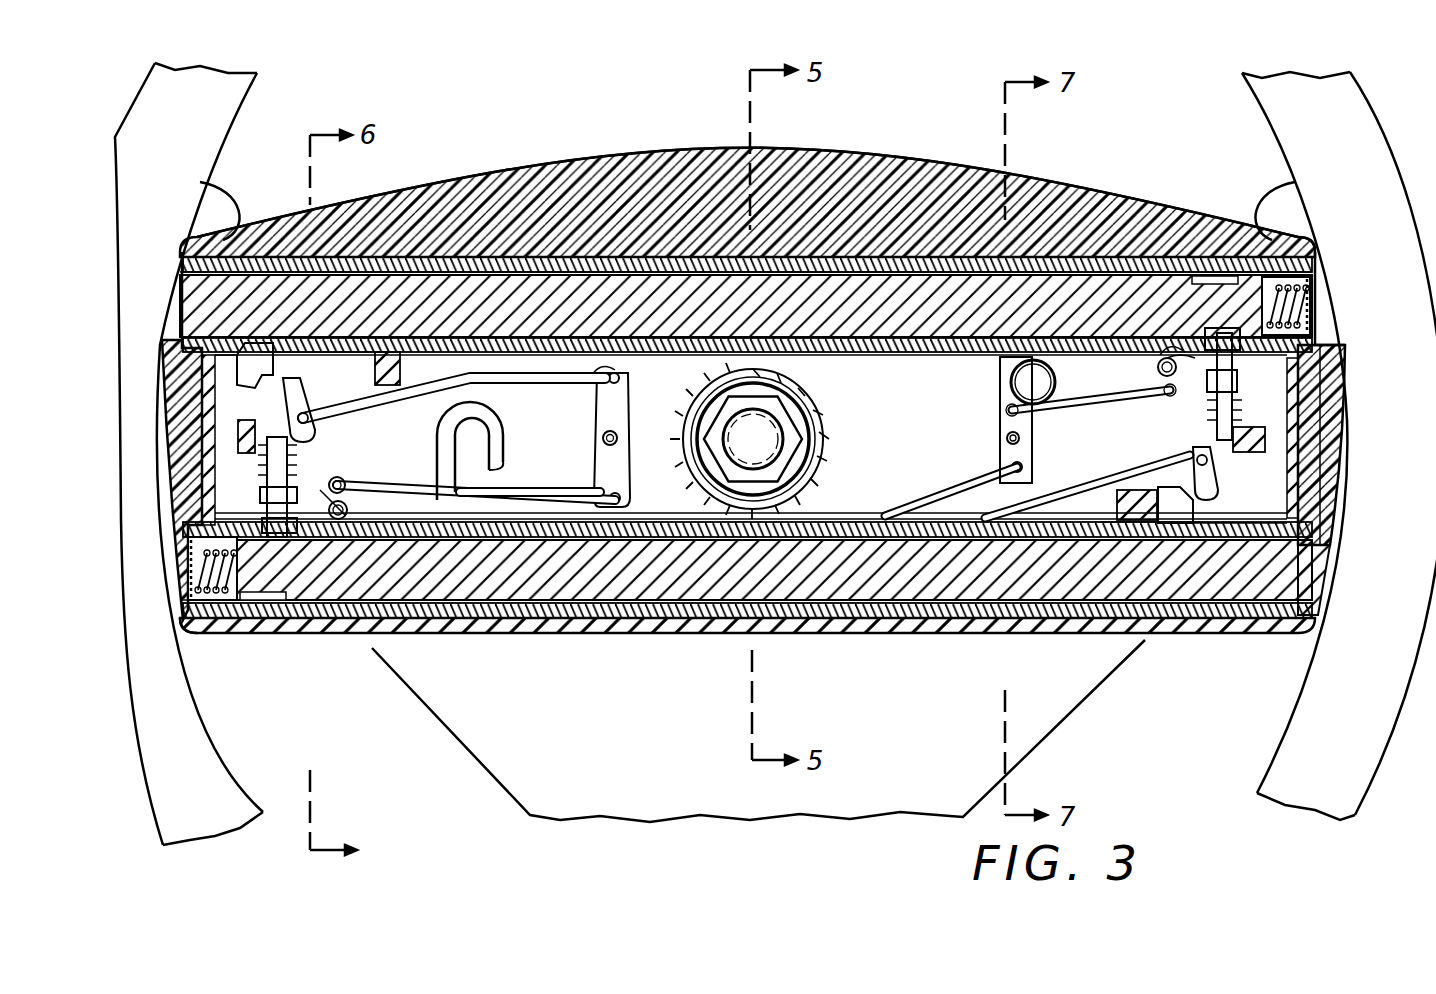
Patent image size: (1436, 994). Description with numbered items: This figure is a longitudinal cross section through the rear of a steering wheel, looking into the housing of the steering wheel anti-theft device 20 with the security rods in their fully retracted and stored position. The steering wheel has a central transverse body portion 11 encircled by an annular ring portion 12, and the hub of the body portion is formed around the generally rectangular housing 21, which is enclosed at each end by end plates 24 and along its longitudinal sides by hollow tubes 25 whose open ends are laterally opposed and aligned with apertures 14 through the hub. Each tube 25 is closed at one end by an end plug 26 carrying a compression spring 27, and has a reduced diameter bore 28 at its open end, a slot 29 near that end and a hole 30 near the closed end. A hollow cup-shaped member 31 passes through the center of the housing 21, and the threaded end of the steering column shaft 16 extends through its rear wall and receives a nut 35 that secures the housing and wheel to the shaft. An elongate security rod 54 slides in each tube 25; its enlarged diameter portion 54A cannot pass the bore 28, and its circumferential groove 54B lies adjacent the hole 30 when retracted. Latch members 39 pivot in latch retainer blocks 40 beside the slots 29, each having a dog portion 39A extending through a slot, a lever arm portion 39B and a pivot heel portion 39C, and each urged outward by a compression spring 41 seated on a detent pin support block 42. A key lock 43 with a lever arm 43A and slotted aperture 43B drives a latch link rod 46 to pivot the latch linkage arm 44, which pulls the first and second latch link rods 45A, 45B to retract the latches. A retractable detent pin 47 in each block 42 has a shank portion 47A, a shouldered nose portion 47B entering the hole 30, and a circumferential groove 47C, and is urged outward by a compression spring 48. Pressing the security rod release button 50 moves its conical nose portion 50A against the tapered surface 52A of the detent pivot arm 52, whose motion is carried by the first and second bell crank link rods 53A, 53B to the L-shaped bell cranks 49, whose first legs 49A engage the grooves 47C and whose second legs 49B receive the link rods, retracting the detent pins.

The central transverse body portion 11 is at (833, 155).
The annular ring portion 12 is at (1283, 75).
The apertures 14 is at (180, 303).
The steering column shaft 16 is at (770, 430).
The steering wheel anti-theft device 20 is at (537, 240).
The housing 21 is at (428, 245).
The end plates 24 is at (185, 470).
The longitudinal hollow tubes 25 is at (898, 263).
The end plug 26 is at (185, 600).
The compression spring 27 is at (180, 560).
The reduced diameter bore 28 is at (185, 273).
The slot 29 is at (297, 340).
The hole 30 is at (1250, 323).
The hollow cup-shaped member 31 is at (805, 480).
The nut 35 is at (790, 452).
The latch members 39 is at (1242, 665).
The dog portion 39A is at (250, 347).
The lever arm portion 39B is at (322, 430).
The pivot heel portion 39C is at (353, 353).
The latch retainer blocks 40 is at (400, 370).
The compression spring 41 is at (205, 390).
The detent pin support block 42 is at (325, 470).
The key lock 43 is at (500, 420).
The lever arm 43A is at (510, 445).
The slotted aperture 43B is at (435, 522).
The latch linkage arm 44 is at (625, 402).
The first latch link rod 45A is at (620, 378).
The second latch link rod 45B is at (628, 500).
The latch link rod 46 is at (515, 482).
The retractable detent pin 47 is at (190, 500).
The shank portion 47A is at (290, 462).
The shouldered nose portion 47B is at (1217, 327).
The circumferential groove 47C is at (1300, 355).
The compression spring 48 is at (258, 455).
The L-shaped bell crank 49 is at (1158, 367).
The first leg 49A is at (1163, 350).
The second leg 49B is at (370, 493).
The security rod release button 50 is at (1055, 400).
The conical nose portion 50A is at (1005, 405).
The detent pivot arm 52 is at (1000, 405).
The tapered surface 52A is at (1012, 378).
The first bell crank link rod 53A is at (1025, 440).
The second bell crank link rod 53B is at (985, 462).
The security rod 54 is at (778, 297).
The enlarged diameter portion 54A is at (1303, 237).
The circumferential groove 54B is at (1182, 277).